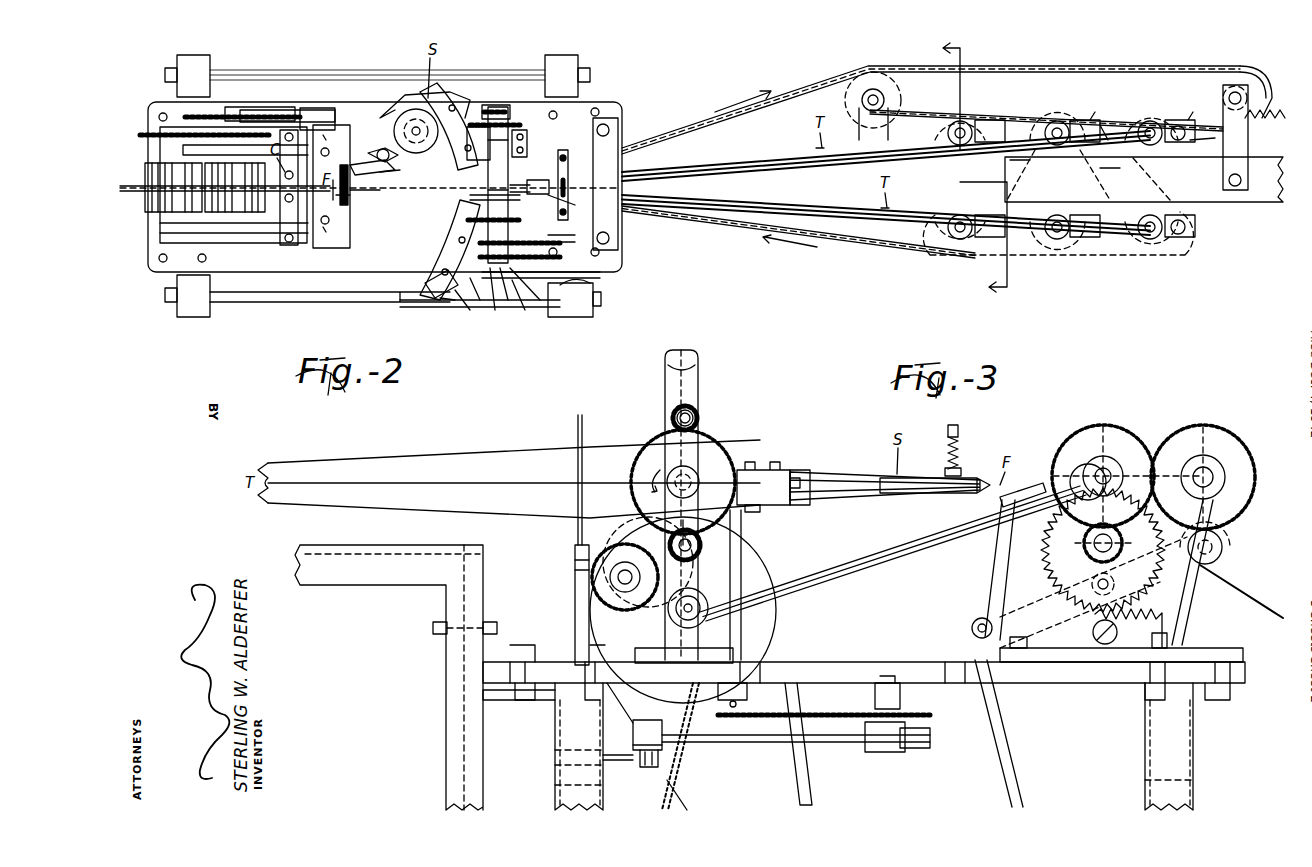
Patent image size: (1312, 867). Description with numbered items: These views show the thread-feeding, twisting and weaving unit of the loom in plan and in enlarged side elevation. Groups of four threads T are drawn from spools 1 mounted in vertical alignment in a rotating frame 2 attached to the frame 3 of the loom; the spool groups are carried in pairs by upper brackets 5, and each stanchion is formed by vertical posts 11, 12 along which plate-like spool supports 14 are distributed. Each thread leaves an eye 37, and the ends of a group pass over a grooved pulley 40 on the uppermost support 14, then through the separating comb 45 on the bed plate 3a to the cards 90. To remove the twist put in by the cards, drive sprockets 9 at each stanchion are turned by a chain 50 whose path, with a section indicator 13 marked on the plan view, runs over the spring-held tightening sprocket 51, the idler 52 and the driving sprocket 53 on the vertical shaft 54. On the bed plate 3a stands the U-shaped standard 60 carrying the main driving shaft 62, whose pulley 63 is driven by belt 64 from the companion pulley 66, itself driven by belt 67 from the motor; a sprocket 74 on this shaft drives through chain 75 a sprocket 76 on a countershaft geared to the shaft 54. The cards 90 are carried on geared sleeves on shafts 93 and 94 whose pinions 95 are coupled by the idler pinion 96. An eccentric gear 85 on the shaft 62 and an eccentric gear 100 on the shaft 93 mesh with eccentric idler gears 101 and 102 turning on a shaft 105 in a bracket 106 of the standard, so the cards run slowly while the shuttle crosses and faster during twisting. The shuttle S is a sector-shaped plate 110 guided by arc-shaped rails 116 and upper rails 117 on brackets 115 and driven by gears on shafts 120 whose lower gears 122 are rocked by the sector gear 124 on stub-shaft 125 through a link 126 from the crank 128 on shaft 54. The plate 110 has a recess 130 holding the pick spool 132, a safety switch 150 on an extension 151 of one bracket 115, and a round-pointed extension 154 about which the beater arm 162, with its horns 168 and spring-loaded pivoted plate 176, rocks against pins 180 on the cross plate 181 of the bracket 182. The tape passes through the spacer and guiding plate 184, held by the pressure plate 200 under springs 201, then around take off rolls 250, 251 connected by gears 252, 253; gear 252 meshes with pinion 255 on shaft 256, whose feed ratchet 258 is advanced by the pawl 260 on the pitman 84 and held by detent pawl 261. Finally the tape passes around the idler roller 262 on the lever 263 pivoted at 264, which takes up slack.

In FIG. 2, the spools 1 is at (972, 122).
In FIG. 2, the rotating frame 2 is at (1195, 185).
In FIG. 3, the rotating frame 2 is at (340, 585).
In FIG. 2, the frame of the loom 3 is at (582, 308).
In FIG. 2, the bed plate 3a is at (610, 102).
In FIG. 3, the bed plate 3a is at (548, 660).
In FIG. 2, the upper brackets 5 is at (975, 125).
In FIG. 2, the drive sprockets 9 is at (584, 247).
In FIG. 2, the vertical posts 11 is at (1104, 124).
In FIG. 2, the vertical posts 12 is at (1186, 133).
In FIG. 2, the section line 13 is at (975, 163).
In FIG. 2, the spool supports 14 is at (938, 118).
In FIG. 2, the eye 37 is at (1092, 118).
In FIG. 2, the grooved pulley 40 is at (1112, 158).
In FIG. 2, the separating comb 45 is at (566, 165).
In FIG. 3, the separating comb 45 is at (578, 427).
In FIG. 2, the chain 50 is at (1080, 68).
In FIG. 2, the spring-held tightening sprocket 51 is at (1250, 80).
In FIG. 2, the idler 52 is at (890, 92).
In FIG. 2, the driving sprocket 53 is at (605, 184).
In FIG. 3, the vertical shaft 54 is at (555, 766).
In FIG. 2, the U-shaped standard 60 is at (508, 167).
In FIG. 3, the U-shaped standard 60 is at (698, 388).
In FIG. 2, the main horizontal driving shaft 62 is at (505, 300).
In FIG. 2, the pulley 63 is at (492, 310).
In FIG. 3, the pulley 63 is at (760, 568).
In FIG. 2, the belt 64 is at (462, 305).
In FIG. 3, the belt 64 is at (812, 790).
In FIG. 2, the companion pulley 66 is at (480, 300).
In FIG. 2, the belt 67 is at (395, 300).
In FIG. 2, the sprocket 74 is at (522, 312).
In FIG. 2, the chain 75 is at (540, 302).
In FIG. 3, the chain 75 is at (665, 755).
In FIG. 2, the sprocket 76 is at (595, 287).
In FIG. 3, the pitman 84 is at (910, 548).
In FIG. 2, the eccentrically mounted gear 85 is at (465, 222).
In FIG. 3, the eccentrically mounted gear 85 is at (648, 605).
In FIG. 2, the cards 90 is at (518, 192).
In FIG. 3, the shaft 93 is at (685, 554).
In FIG. 3, the parallel shaft 94 is at (700, 414).
In FIG. 2, the pinions 95 is at (510, 112).
In FIG. 3, the pinions 95 is at (698, 408).
In FIG. 2, the idler pinion 96 is at (522, 126).
In FIG. 3, the idler pinion 96 is at (705, 448).
In FIG. 2, the eccentric gear 100 is at (494, 199).
In FIG. 2, the eccentric idler gear 101 is at (575, 236).
In FIG. 2, the eccentric idler gear 102 is at (570, 227).
In FIG. 2, the shaft 105 is at (538, 193).
In FIG. 3, the shaft 105 is at (610, 585).
In FIG. 2, the bracket 106 is at (573, 207).
In FIG. 3, the bracket 106 is at (630, 595).
In FIG. 2, the sector-shaped plate 110 is at (378, 158).
In FIG. 3, the sector-shaped plate 110 is at (858, 472).
In FIG. 2, the bracket 115 is at (480, 150).
In FIG. 3, the bracket 115 is at (745, 512).
In FIG. 2, the arc-shaped rails 116 is at (468, 155).
In FIG. 3, the arc-shaped rails 116 is at (828, 512).
In FIG. 2, the rail 117 is at (463, 110).
In FIG. 3, the rail 117 is at (760, 470).
In FIG. 3, the shaft 120 is at (735, 548).
In FIG. 3, the gears 122 is at (750, 708).
In FIG. 3, the sector gear 124 is at (828, 712).
In FIG. 3, the stub-shaft 125 is at (905, 695).
In FIG. 3, the link 126 is at (832, 742).
In FIG. 3, the crank 128 is at (634, 762).
In FIG. 2, the recess 130 is at (435, 110).
In FIG. 2, the spool 132 is at (400, 110).
In FIG. 2, the safety switch 150 is at (425, 283).
In FIG. 2, the extension 151 is at (440, 302).
In FIG. 2, the extension 154 is at (372, 148).
In FIG. 2, the beater arm 162 is at (392, 173).
In FIG. 2, the horns 168 is at (331, 148).
In FIG. 2, the pivoted plate 176 is at (360, 192).
In FIG. 3, the pin 180 is at (958, 432).
In FIG. 2, the cross plate 181 is at (350, 238).
In FIG. 3, the cross plate 181 is at (925, 495).
In FIG. 2, the bracket 182 is at (312, 145).
In FIG. 3, the bracket 182 is at (985, 585).
In FIG. 2, the spacer and guiding plate 184 is at (338, 194).
In FIG. 2, the sliding pressure plate 200 is at (342, 205).
In FIG. 3, the sliding pressure plate 200 is at (958, 470).
In FIG. 3, the springs 201 is at (960, 445).
In FIG. 2, the take off roll 250 is at (250, 200).
In FIG. 2, the take off roll 251 is at (160, 198).
In FIG. 2, the gear 252 is at (262, 110).
In FIG. 3, the gear 252 is at (1125, 440).
In FIG. 2, the gear 253 is at (150, 130).
In FIG. 3, the gear 253 is at (1210, 428).
In FIG. 3, the driving pinion 255 is at (1122, 540).
In FIG. 3, the shaft 256 is at (1086, 540).
In FIG. 2, the feed ratchet 258 is at (215, 112).
In FIG. 3, the feed ratchet 258 is at (1042, 552).
In FIG. 2, the pawl 260 is at (258, 108).
In FIG. 3, the pawl 260 is at (1090, 505).
In FIG. 3, the detent pawl 261 is at (1088, 620).
In FIG. 3, the idler roller 262 is at (1226, 545).
In FIG. 2, the lever 263 is at (308, 233).
In FIG. 3, the lever 263 is at (1022, 612).
In FIG. 3, the pivot 264 is at (1112, 578).